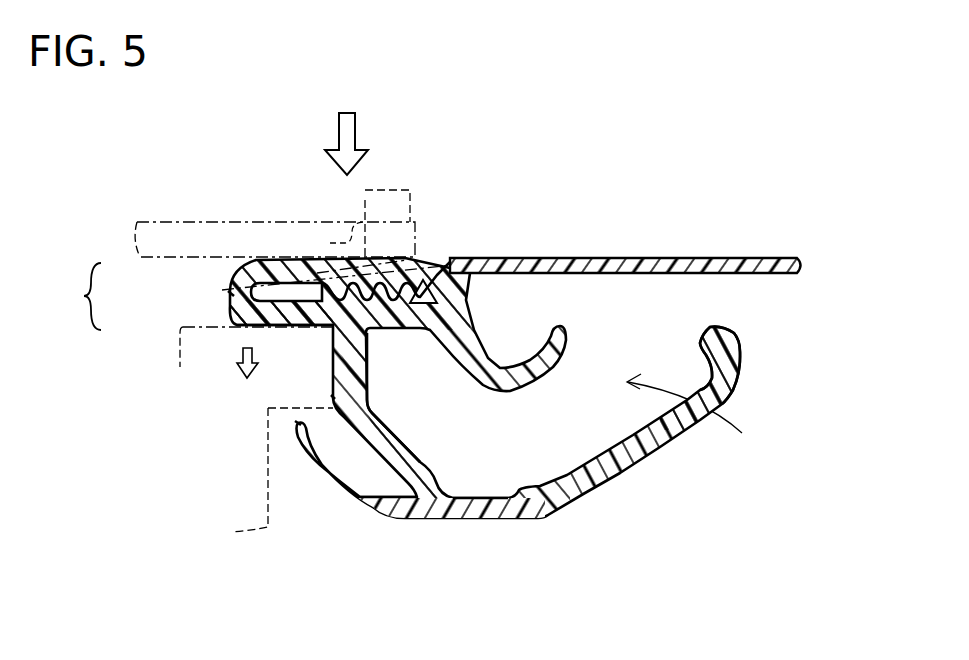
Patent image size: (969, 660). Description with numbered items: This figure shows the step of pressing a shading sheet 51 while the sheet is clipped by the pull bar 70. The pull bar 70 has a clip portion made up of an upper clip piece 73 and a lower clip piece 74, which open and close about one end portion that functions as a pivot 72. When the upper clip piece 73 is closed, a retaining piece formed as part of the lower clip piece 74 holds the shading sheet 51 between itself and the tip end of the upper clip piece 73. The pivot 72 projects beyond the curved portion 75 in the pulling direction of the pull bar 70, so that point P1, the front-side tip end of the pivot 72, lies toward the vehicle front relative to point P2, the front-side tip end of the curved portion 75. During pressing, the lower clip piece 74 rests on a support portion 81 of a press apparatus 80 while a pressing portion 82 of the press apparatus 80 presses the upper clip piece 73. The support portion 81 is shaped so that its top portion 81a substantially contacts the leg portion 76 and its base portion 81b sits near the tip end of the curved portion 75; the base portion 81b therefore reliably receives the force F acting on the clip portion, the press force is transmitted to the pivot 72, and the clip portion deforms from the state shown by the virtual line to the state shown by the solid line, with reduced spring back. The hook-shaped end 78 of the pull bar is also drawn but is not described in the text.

The pull bar 70 is at (663, 462).
The pivot 72 is at (245, 297).
The upper clip piece 73 is at (243, 258).
The lower clip piece 74 is at (300, 318).
The curved portion 75 is at (470, 518).
The leg portion 76 is at (365, 357).
The hook portion 78 is at (683, 399).
The shading sheet 51 is at (672, 258).
The press apparatus 80 is at (74, 296).
The support portion 81 is at (198, 325).
The top portion 81a is at (333, 397).
The base portion 81b is at (268, 453).
The pressing portion 82 is at (173, 258).
The force F is at (238, 367).
The front-side tip end of the pivot P1 is at (232, 294).
The front-side tip end of the curved portion P2 is at (297, 425).